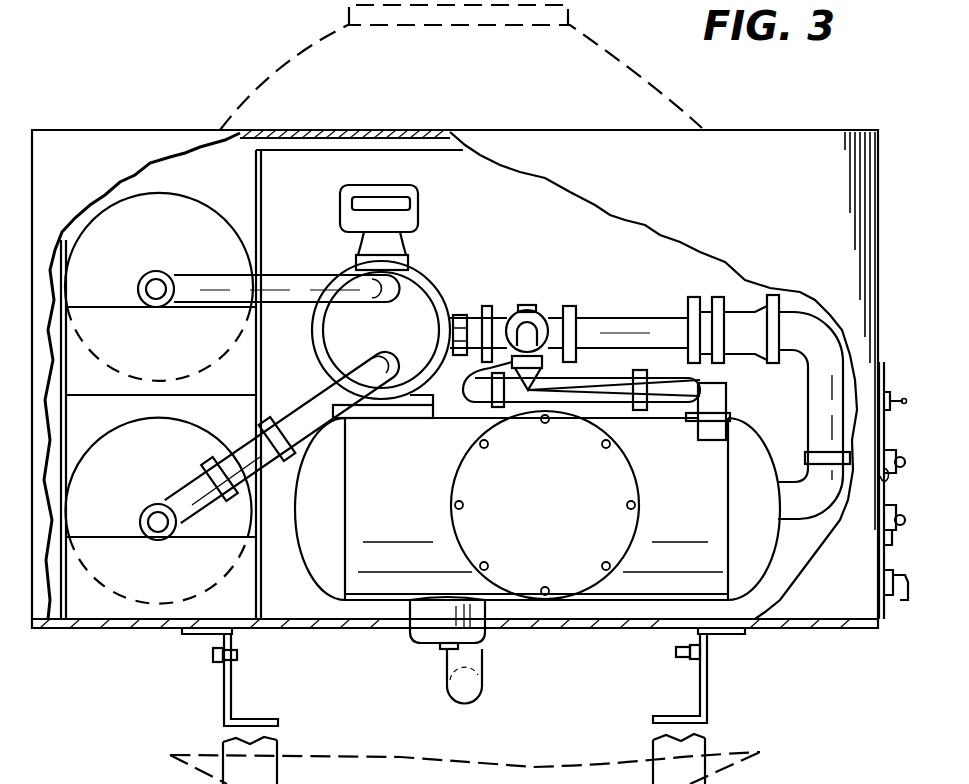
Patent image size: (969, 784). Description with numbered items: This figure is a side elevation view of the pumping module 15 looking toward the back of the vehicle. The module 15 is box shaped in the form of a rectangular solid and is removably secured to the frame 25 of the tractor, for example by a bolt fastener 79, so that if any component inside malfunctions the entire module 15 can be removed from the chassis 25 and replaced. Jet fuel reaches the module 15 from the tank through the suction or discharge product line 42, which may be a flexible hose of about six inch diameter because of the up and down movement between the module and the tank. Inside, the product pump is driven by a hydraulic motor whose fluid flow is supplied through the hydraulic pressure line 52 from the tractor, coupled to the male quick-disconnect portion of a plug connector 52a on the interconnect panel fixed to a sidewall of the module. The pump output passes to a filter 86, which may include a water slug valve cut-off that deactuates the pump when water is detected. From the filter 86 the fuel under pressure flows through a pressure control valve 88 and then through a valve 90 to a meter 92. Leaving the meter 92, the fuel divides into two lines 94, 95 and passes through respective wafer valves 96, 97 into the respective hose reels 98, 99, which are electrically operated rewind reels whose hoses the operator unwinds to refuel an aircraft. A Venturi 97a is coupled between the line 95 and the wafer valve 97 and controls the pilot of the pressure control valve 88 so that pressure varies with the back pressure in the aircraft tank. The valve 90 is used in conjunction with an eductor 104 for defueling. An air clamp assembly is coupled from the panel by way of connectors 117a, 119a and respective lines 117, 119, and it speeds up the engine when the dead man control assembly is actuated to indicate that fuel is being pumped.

The pumping module 15 is at (140, 75).
The frame 25 is at (232, 700).
The product line 42 is at (485, 652).
The hydraulic pressure line 52 is at (900, 600).
The plug connector 52a is at (883, 582).
The bolt fastener 79 is at (185, 634).
The filter 86 is at (350, 556).
The pressure control valve 88 is at (735, 300).
The valve 90 is at (555, 314).
The meter 92 is at (432, 290).
The line 94 is at (305, 276).
The line 95 is at (315, 399).
The wafer valve 96 is at (158, 274).
The wafer valve 97 is at (152, 513).
The Venturi 97a is at (240, 460).
The hose reel 98 is at (185, 207).
The hose reel 99 is at (125, 444).
The eductor 104 is at (605, 395).
The line 117 is at (886, 477).
The connector 117a is at (886, 457).
The line 119 is at (880, 503).
The connector 119a is at (882, 533).